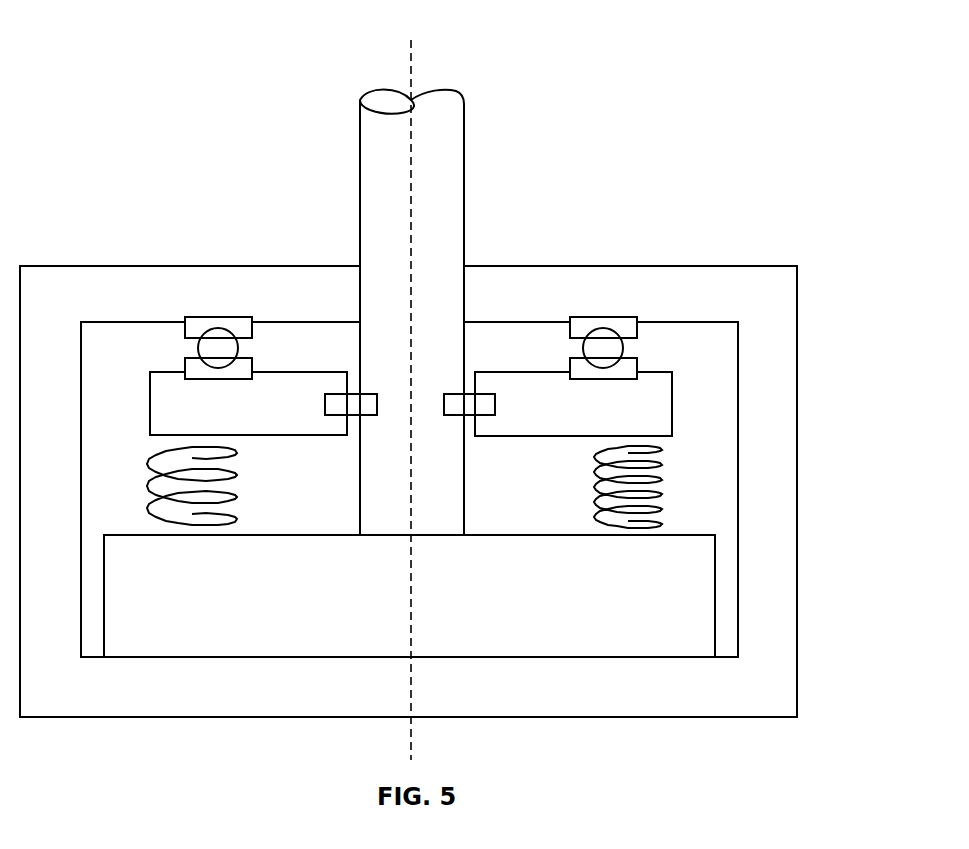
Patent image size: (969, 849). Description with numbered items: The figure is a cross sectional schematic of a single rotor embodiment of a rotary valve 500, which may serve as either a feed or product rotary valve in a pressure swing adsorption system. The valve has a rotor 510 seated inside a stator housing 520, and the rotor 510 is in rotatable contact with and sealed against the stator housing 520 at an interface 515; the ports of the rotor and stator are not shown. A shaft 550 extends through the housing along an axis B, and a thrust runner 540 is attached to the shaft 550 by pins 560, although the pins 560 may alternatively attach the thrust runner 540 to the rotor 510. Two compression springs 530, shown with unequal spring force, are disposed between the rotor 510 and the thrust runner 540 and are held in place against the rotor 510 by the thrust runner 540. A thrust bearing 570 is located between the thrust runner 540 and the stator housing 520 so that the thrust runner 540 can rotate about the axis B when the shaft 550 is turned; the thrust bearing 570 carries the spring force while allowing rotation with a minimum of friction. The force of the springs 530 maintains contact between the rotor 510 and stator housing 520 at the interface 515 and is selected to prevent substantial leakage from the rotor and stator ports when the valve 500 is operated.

The rotary valve 500 is at (190, 42).
The rotor 510 is at (715, 603).
The interface 515 is at (635, 658).
The stator housing 520 is at (797, 507).
The compression springs 530 is at (237, 497).
The thrust runner 540 is at (658, 369).
The shaft 550 is at (464, 160).
The pins 560 is at (485, 393).
The thrust bearing 570 is at (620, 316).
The axis B is at (397, 35).